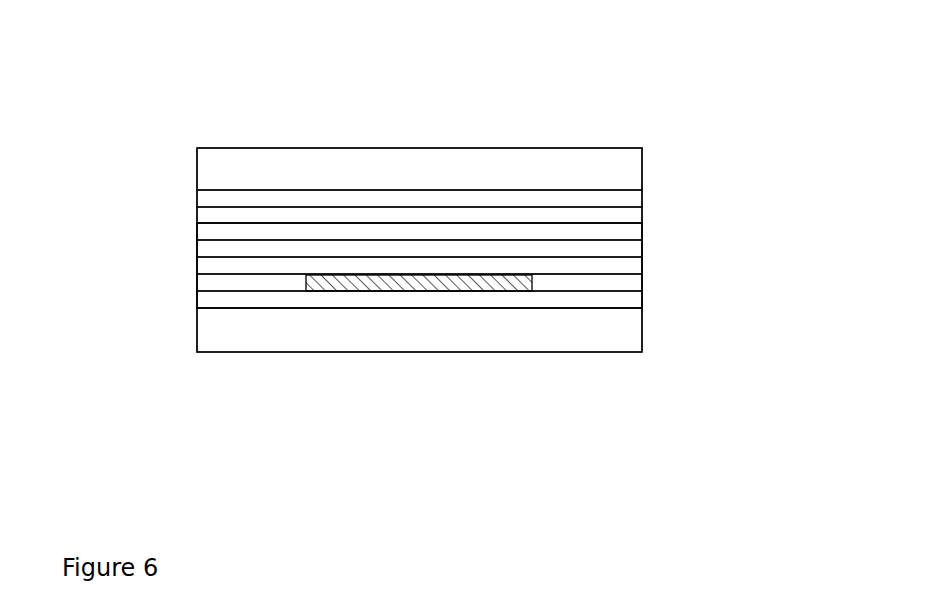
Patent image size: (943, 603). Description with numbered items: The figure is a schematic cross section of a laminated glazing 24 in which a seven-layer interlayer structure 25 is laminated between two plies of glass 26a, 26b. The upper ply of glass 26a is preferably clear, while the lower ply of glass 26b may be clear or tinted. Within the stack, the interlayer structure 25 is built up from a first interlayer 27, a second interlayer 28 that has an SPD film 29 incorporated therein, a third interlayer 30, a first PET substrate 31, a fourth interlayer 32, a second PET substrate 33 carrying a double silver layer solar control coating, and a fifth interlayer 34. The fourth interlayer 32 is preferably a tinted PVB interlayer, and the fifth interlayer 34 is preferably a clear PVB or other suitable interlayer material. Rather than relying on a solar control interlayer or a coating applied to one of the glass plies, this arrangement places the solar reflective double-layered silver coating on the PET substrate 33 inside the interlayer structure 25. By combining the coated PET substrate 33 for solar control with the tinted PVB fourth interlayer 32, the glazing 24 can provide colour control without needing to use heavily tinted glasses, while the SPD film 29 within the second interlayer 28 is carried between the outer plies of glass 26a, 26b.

The glazing 24 is at (693, 158).
The interlayer structure 25 is at (178, 310).
The upper ply of glass 26a is at (338, 160).
The lower ply of glass 26b is at (227, 335).
The first interlayer 27 is at (635, 303).
The second interlayer 28 is at (637, 288).
The SPD film 29 is at (437, 292).
The third interlayer 30 is at (633, 268).
The first PET substrate 31 is at (203, 247).
The fourth interlayer 32 is at (633, 237).
The second PET substrate 33 is at (637, 216).
The fifth interlayer 34 is at (222, 198).